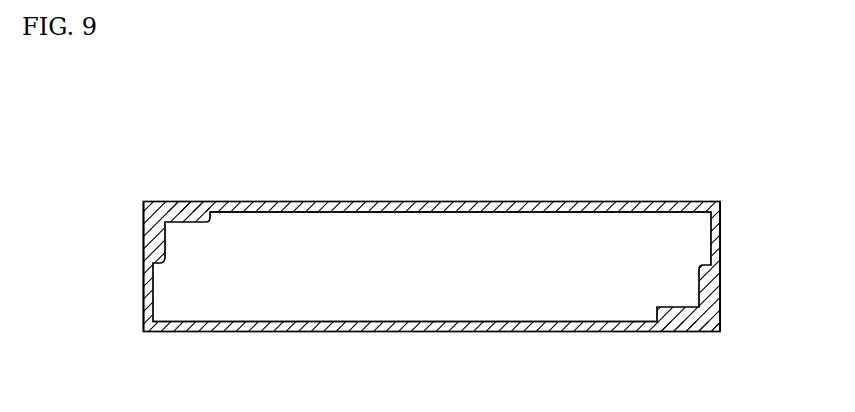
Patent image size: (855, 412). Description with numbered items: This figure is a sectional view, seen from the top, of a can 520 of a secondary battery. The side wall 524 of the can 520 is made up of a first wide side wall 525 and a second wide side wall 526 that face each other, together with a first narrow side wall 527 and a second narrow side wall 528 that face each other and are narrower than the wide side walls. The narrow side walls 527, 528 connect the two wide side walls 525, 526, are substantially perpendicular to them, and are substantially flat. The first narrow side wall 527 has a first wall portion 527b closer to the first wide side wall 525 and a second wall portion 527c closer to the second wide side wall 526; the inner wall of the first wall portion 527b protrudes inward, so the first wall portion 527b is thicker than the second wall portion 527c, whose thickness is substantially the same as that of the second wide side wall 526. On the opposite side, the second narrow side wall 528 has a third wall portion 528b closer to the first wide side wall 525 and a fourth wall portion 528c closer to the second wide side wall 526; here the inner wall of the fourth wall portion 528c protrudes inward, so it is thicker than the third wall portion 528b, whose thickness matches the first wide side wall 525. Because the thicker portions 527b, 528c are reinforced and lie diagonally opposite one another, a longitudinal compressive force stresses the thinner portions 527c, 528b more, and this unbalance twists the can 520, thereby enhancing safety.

The can 520 is at (118, 138).
The side wall 524 is at (572, 194).
The first wide side wall 525 is at (390, 210).
The second wide side wall 526 is at (300, 324).
The first narrow side wall 527 is at (150, 262).
The first wall portion 527b is at (153, 230).
The second wall portion 527c is at (147, 298).
The second narrow side wall 528 is at (720, 265).
The third wall portion 528b is at (720, 223).
The fourth wall portion 528c is at (715, 300).